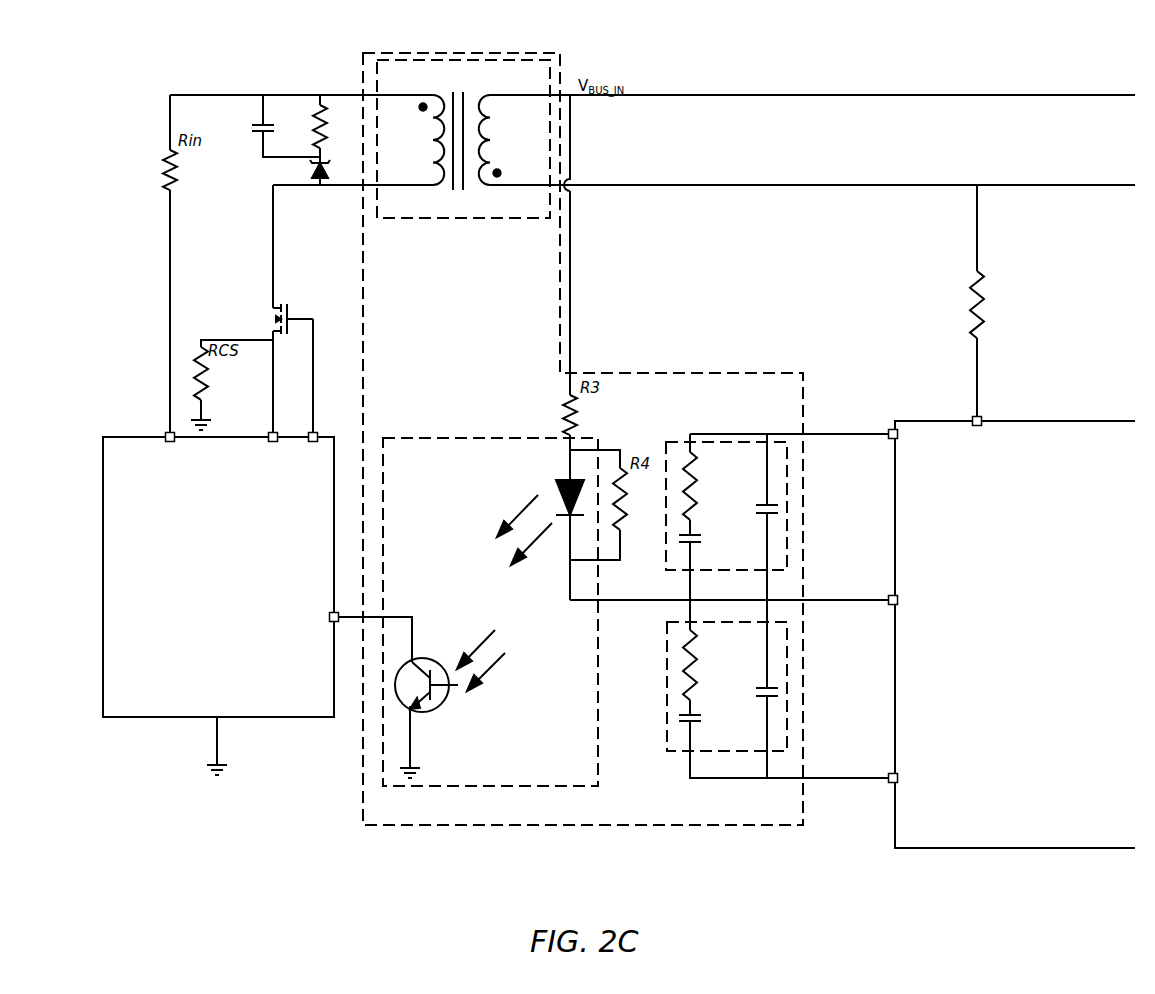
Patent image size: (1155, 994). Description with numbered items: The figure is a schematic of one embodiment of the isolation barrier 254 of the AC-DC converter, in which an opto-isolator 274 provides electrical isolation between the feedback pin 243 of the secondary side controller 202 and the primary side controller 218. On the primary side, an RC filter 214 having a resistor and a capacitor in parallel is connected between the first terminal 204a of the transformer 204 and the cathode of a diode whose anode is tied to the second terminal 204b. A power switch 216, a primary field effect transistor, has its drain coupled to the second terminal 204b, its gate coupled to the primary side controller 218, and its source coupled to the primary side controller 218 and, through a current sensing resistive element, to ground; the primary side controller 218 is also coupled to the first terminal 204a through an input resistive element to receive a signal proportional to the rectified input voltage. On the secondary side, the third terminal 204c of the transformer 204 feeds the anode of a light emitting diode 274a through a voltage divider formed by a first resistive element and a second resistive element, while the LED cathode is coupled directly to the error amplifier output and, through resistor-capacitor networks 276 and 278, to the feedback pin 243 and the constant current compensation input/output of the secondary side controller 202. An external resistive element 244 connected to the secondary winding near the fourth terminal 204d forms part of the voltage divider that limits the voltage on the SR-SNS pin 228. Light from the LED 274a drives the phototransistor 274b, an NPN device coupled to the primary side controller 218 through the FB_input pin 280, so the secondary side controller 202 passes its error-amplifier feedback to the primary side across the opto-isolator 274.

The secondary side controller 202 is at (971, 631).
The transformer 204 is at (374, 60).
The first terminal of the transformer 204a is at (420, 97).
The second terminal of the transformer 204b is at (423, 188).
The third terminal of the transformer 204c is at (520, 88).
The fourth terminal of the transformer 204d is at (512, 188).
The RC filter 214 is at (290, 86).
The power switch 216 is at (266, 310).
The primary side controller 218 is at (218, 604).
The SR-SNS pin 228 is at (982, 418).
The feedback pin 243 is at (888, 774).
The external resistive element 244 is at (977, 276).
The isolation barrier 254 is at (583, 439).
The opto-isolator 274 is at (490, 612).
The light emitting diode 274a is at (556, 482).
The phototransistor 274b is at (427, 714).
The resistor-capacitor network 276 is at (726, 506).
The resistor-capacitor network 278 is at (727, 686).
The FB_input pin 280 is at (326, 620).